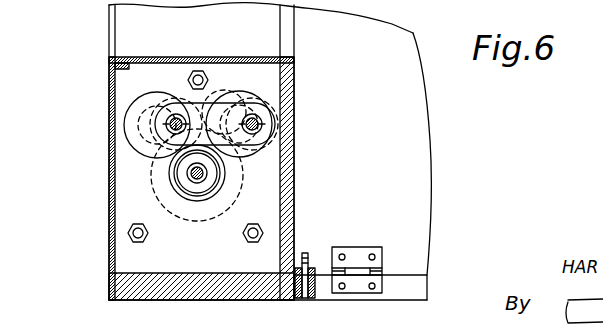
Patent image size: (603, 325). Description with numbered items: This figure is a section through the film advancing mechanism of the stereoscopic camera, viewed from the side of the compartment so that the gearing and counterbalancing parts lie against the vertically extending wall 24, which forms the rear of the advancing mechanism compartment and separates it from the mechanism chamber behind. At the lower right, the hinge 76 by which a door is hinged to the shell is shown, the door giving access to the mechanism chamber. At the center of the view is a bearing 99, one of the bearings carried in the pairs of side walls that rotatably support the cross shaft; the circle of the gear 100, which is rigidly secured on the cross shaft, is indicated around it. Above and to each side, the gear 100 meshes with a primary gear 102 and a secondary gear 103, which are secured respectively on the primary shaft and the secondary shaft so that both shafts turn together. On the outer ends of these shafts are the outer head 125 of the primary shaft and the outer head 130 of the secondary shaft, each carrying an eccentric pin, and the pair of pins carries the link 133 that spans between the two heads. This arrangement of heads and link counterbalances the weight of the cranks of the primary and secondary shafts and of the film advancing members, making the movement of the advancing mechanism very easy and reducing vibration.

The vertically extending wall 24 is at (295, 168).
The hinge 76 is at (360, 254).
The bearing 99 is at (208, 176).
The gear 100 is at (186, 222).
The primary gear 102 is at (216, 118).
The secondary gear 103 is at (143, 121).
The outer head 125 is at (243, 97).
The outer head 130 is at (153, 98).
The link 133 is at (258, 114).